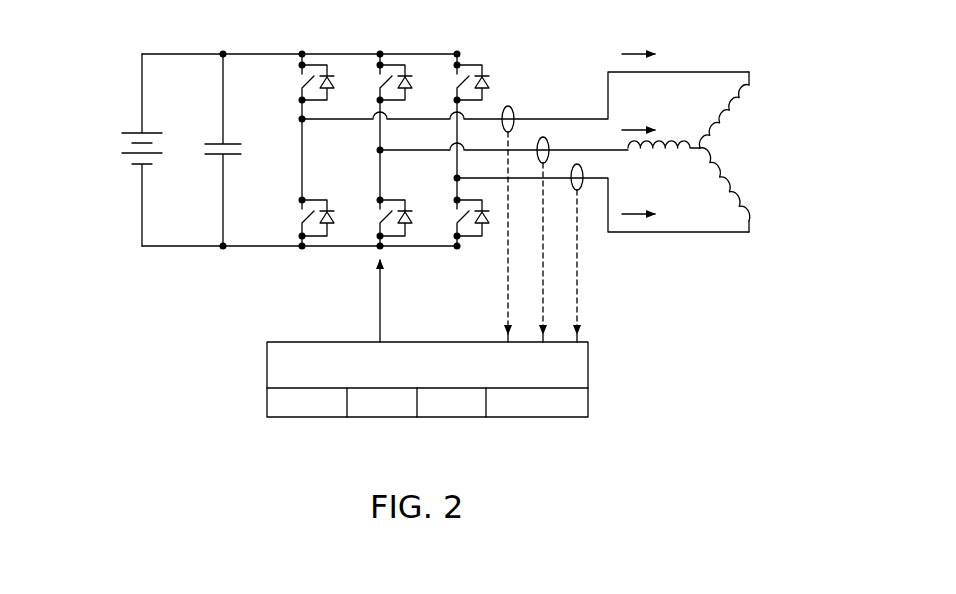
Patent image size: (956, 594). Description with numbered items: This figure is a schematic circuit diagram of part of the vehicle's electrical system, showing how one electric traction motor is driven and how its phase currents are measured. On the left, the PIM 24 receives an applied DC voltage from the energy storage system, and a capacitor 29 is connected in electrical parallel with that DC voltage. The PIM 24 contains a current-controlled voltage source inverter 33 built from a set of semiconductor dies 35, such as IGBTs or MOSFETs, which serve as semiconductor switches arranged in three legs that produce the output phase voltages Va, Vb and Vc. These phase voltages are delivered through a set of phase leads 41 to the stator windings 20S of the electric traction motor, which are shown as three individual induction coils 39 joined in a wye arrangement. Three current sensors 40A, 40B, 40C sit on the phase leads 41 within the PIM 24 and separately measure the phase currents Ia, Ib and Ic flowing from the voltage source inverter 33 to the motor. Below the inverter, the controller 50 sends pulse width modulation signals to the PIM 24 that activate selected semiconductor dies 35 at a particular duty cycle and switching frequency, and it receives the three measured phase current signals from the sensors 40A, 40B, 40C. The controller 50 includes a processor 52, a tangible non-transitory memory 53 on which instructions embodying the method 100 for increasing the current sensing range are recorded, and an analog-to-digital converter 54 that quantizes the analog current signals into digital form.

The stator windings 20S is at (728, 124).
The PIM 24 is at (122, 244).
The capacitor 29 is at (211, 172).
The current-controlled voltage source inverter 33 is at (359, 128).
The semiconductor dies 35 is at (277, 70).
The induction coils 39 is at (737, 194).
The current sensor 40A is at (513, 111).
The current sensor 40B is at (548, 142).
The current sensor 40C is at (583, 170).
The phase leads 41 is at (578, 78).
The controller 50 is at (461, 367).
The method 100 is at (319, 402).
The processor 52 is at (382, 421).
The memory 53 is at (452, 421).
The analog-to-digital converter 54 is at (535, 421).